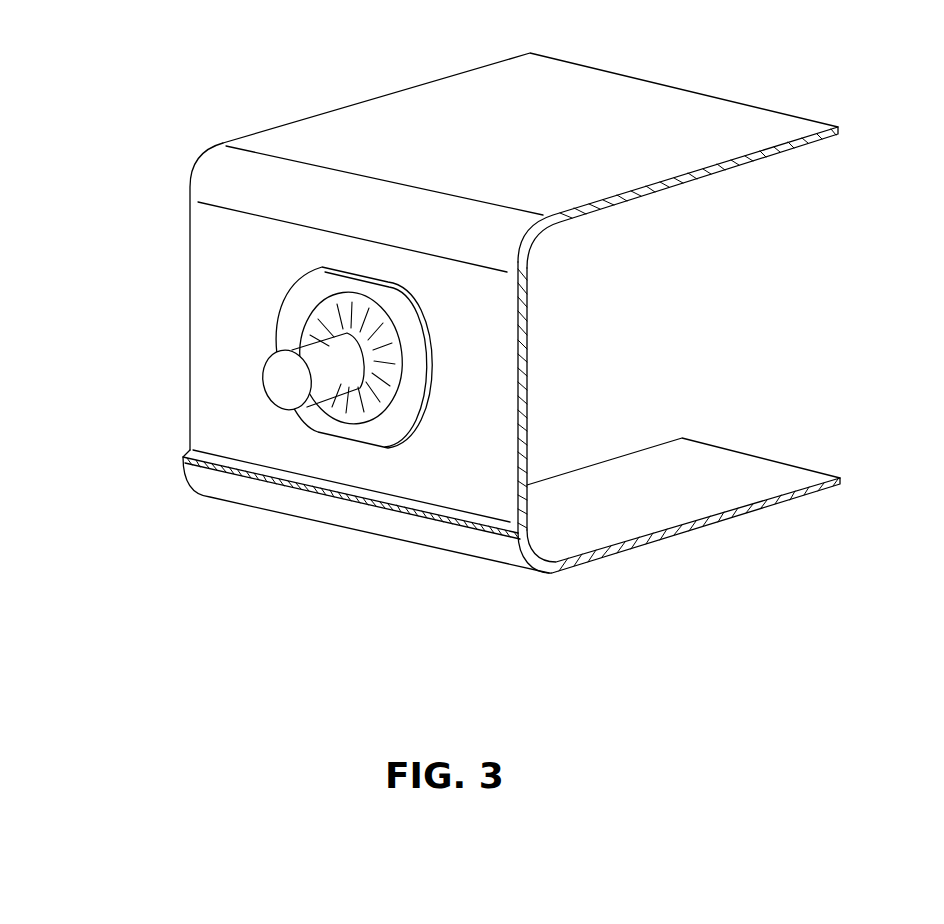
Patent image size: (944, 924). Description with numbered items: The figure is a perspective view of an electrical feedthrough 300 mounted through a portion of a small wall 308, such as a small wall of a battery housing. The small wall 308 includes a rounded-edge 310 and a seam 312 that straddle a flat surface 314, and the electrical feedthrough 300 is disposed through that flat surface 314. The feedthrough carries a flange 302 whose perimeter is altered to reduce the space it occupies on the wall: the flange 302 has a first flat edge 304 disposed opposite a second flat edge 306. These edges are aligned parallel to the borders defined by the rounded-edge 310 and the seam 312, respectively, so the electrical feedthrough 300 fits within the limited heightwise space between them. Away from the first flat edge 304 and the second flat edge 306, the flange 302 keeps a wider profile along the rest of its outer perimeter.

The electrical feedthrough 300 is at (275, 262).
The flange 302 is at (395, 305).
The first flat edge 304 is at (355, 270).
The second flat edge 306 is at (345, 437).
The small wall 308 is at (205, 152).
The rounded-edge 310 is at (315, 195).
The seam 312 is at (477, 520).
The flat surface 314 is at (177, 207).